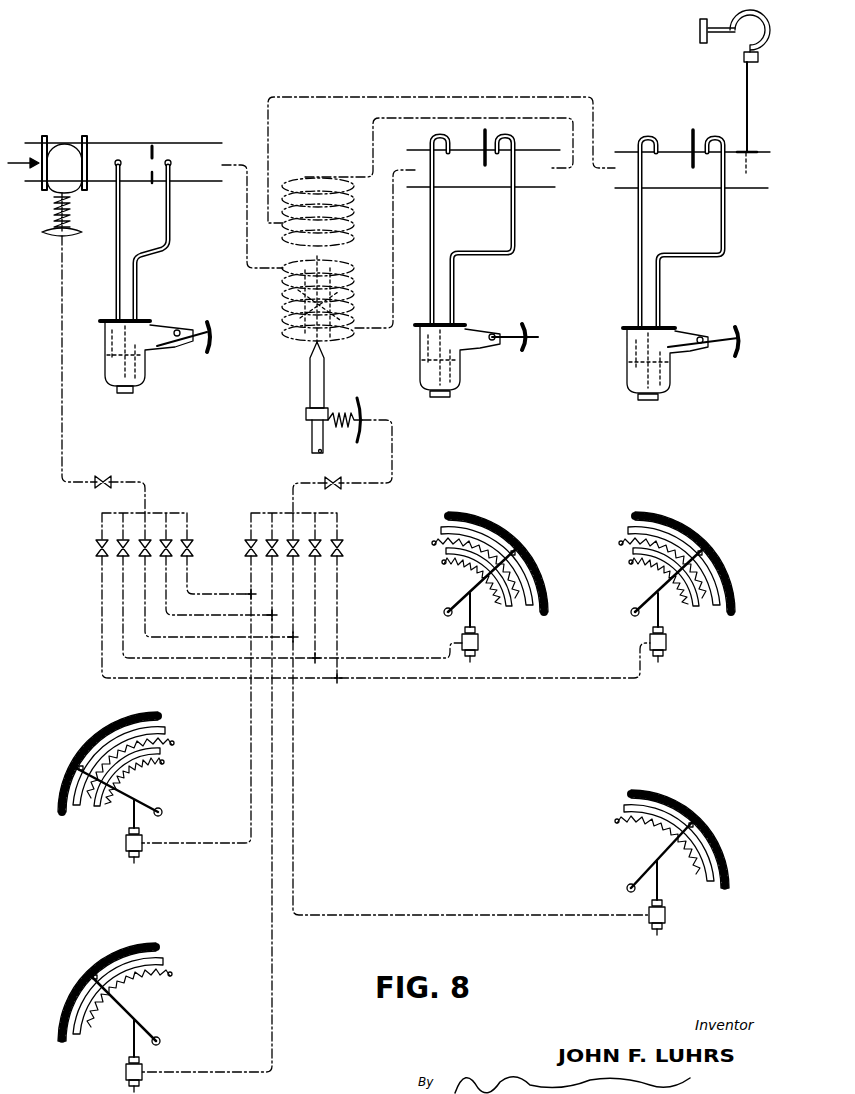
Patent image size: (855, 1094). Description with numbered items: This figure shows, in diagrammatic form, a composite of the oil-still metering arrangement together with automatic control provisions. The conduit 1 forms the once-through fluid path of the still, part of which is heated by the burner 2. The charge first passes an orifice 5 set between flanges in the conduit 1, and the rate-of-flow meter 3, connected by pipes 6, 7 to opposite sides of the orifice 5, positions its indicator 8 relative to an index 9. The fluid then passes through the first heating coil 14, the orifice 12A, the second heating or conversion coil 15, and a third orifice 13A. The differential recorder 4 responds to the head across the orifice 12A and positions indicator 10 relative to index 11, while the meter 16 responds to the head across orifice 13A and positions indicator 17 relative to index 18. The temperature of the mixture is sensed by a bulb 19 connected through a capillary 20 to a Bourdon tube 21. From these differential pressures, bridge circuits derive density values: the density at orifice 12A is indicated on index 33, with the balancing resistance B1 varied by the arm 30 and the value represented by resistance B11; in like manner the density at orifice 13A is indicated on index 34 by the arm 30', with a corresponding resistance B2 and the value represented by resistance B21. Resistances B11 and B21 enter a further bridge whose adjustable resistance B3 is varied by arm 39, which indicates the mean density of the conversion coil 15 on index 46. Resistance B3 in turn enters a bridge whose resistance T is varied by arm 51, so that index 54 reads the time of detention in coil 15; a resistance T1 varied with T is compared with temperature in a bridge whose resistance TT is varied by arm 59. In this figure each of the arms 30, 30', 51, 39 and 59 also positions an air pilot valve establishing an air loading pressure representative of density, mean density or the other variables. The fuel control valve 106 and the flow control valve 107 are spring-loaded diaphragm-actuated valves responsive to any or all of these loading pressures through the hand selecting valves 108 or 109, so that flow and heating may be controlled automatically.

The conduit 1 is at (194, 183).
The burner 2 is at (326, 389).
The rate of flow meter 3 is at (107, 341).
The differential recorder 4 is at (421, 344).
The orifice 5 is at (152, 182).
The pipe 6 is at (116, 259).
The pipe 7 is at (137, 263).
The indicator 8 is at (197, 324).
The index 9 is at (217, 336).
The indicator 10 is at (515, 317).
The index 11 is at (539, 338).
The orifice 12A is at (485, 164).
The orifice 13A is at (693, 164).
The heating coil 14 is at (352, 295).
The heating coil 15 is at (354, 222).
The meter 16 is at (628, 358).
The indicator 17 is at (718, 331).
The index 18 is at (748, 340).
The bulb 19 is at (750, 160).
The capillary 20 is at (746, 110).
The Bourdon tube 21 is at (745, 50).
The arm 30 is at (475, 604).
The arm 30' is at (654, 604).
The index 33 is at (478, 515).
The index 34 is at (689, 526).
The arm 39 is at (639, 871).
The index 46 is at (684, 802).
The arm 51 is at (146, 804).
The index 54 is at (105, 729).
The arm 59 is at (138, 1009).
The fuel control valve 106 is at (362, 415).
The flow control valve 107 is at (72, 140).
The hand selecting valves 108 is at (124, 537).
The hand selecting valves 109 is at (317, 537).
The balancing resistance B1 is at (451, 543).
The resistance B11 is at (493, 620).
The bimetal element B2 is at (634, 545).
The resistance B21 is at (636, 571).
The adjustable resistance B3 is at (657, 829).
The adjustable resistance T is at (162, 740).
The resistance T1 is at (163, 763).
The resistance TT is at (156, 966).